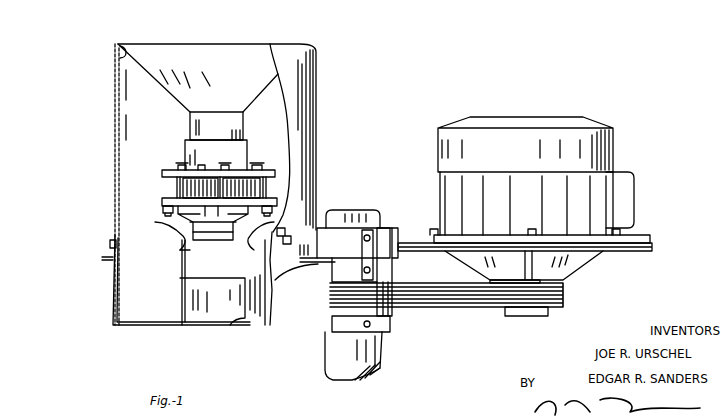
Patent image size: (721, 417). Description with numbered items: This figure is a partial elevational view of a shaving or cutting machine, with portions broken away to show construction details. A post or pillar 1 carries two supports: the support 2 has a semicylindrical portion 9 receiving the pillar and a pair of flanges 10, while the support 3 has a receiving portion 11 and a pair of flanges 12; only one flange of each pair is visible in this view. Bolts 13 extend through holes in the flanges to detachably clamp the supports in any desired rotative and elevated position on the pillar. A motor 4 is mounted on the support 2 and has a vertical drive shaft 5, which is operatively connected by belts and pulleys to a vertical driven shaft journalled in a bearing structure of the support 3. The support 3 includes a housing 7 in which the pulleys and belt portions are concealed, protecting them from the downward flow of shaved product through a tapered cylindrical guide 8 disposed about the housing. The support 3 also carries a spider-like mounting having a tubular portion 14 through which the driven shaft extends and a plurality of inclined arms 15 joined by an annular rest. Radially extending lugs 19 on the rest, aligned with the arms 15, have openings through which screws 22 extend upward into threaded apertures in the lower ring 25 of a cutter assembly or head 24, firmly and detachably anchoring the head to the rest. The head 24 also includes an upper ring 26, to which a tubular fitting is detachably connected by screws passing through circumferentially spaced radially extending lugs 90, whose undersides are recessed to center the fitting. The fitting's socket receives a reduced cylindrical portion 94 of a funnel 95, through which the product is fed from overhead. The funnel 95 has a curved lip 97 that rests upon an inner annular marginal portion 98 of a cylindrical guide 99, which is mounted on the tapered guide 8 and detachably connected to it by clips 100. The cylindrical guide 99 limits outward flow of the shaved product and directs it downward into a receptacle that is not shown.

The post or pillar 1 is at (330, 350).
The support 2 is at (652, 247).
The support 3 is at (275, 280).
The motor 4 is at (614, 155).
The vertical drive shaft 5 is at (520, 280).
The housing 7 is at (190, 303).
The tapered cylindrical guide 8 is at (115, 292).
The semicylindrical portion 9 is at (393, 240).
The flanges 10 is at (392, 270).
The receiving portion 11 is at (345, 232).
The flanges 12 is at (362, 249).
The bolts 13 is at (362, 270).
The tubular portion 14 is at (196, 240).
The inclined arms 15 is at (190, 216).
The radially extending lugs 19 is at (162, 203).
The screws 22 is at (165, 212).
The cutter assembly or head 24 is at (168, 160).
The lower ring 25 is at (162, 196).
The upper ring 26 is at (162, 172).
The radially extending lugs 90 is at (190, 168).
The reduced cylindrical portion 94 is at (244, 120).
The funnel 95 is at (217, 56).
The curved lip 97 is at (118, 45).
The inner annular marginal portion 98 is at (118, 58).
The cylindrical guide 99 is at (115, 142).
The clips 100 is at (110, 243).